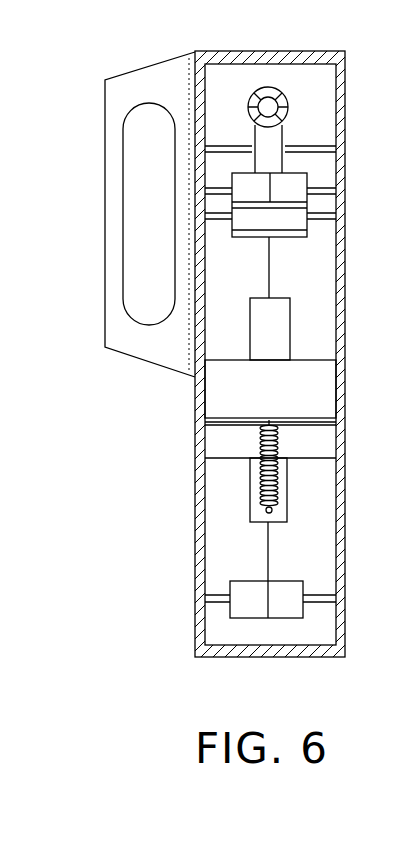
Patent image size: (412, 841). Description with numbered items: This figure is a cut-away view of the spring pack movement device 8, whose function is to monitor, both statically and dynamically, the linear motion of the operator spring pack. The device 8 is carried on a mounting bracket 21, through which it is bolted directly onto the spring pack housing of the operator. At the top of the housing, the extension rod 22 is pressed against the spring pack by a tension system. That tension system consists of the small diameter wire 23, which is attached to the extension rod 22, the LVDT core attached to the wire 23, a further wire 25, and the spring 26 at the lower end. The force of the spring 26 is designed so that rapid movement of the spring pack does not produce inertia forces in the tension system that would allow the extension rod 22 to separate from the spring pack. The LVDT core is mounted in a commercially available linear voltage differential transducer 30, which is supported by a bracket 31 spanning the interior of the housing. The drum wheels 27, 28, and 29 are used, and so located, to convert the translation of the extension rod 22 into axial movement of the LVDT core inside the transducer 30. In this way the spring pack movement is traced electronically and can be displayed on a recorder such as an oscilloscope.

The spring pack movement device 8 is at (195, 500).
The mounting bracket 21 is at (105, 132).
The extension rod 22 is at (271, 105).
The small diameter wire 23 is at (272, 276).
The wire 25 is at (271, 562).
The spring 26 is at (280, 492).
The drum wheel 27 is at (309, 178).
The drum wheel 28 is at (309, 235).
The drum wheel 29 is at (285, 619).
The linear voltage differential transducer 30 is at (292, 328).
The bracket 31 is at (304, 397).